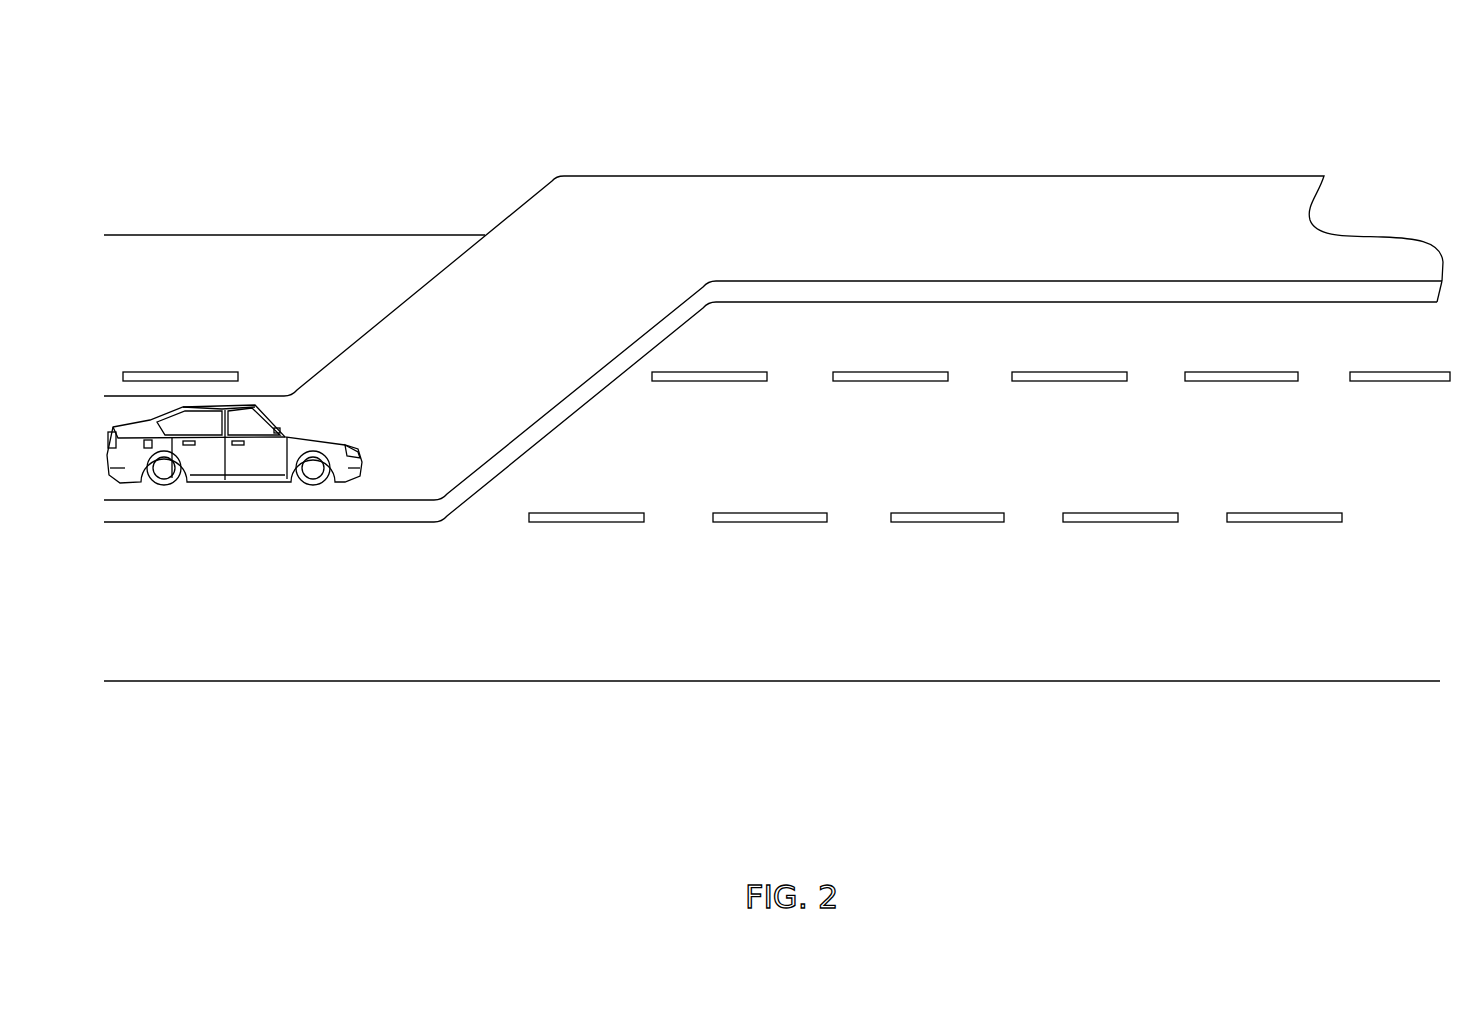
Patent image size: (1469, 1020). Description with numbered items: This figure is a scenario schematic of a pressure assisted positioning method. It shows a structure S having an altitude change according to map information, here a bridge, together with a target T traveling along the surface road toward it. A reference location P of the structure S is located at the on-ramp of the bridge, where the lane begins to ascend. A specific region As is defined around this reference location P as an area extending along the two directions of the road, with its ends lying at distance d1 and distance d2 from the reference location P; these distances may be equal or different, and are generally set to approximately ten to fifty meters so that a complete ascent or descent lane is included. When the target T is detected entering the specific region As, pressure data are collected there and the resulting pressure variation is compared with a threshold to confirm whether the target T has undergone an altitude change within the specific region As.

The structure S is at (1075, 172).
The reference location P is at (495, 283).
The target T is at (243, 405).
The specific region As is at (927, 149).
The distance d1 is at (514, 592).
The distance d2 is at (927, 592).